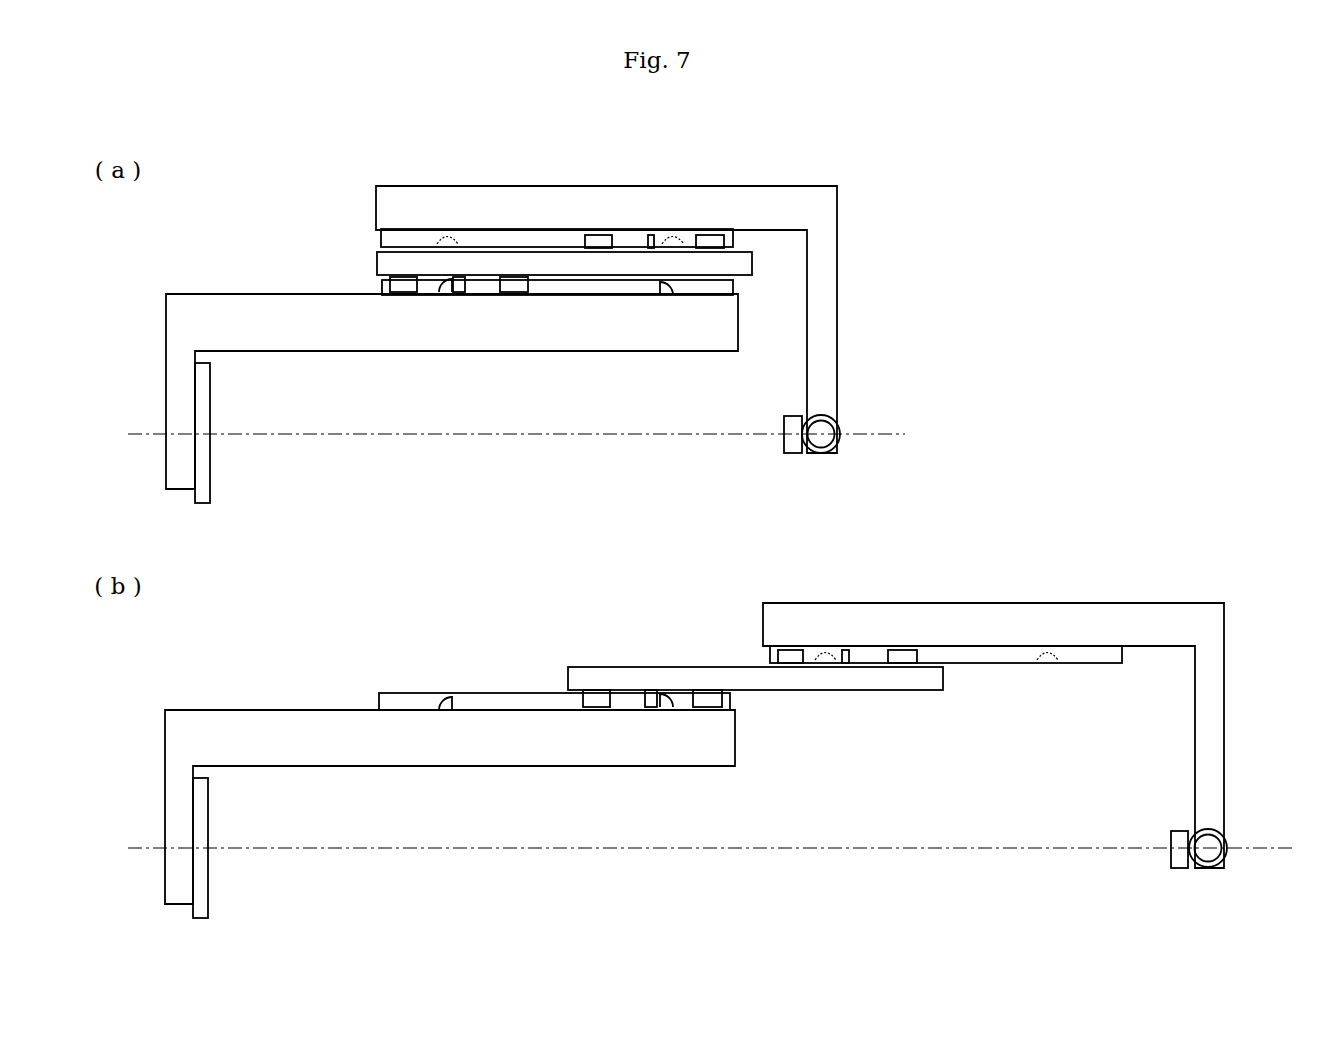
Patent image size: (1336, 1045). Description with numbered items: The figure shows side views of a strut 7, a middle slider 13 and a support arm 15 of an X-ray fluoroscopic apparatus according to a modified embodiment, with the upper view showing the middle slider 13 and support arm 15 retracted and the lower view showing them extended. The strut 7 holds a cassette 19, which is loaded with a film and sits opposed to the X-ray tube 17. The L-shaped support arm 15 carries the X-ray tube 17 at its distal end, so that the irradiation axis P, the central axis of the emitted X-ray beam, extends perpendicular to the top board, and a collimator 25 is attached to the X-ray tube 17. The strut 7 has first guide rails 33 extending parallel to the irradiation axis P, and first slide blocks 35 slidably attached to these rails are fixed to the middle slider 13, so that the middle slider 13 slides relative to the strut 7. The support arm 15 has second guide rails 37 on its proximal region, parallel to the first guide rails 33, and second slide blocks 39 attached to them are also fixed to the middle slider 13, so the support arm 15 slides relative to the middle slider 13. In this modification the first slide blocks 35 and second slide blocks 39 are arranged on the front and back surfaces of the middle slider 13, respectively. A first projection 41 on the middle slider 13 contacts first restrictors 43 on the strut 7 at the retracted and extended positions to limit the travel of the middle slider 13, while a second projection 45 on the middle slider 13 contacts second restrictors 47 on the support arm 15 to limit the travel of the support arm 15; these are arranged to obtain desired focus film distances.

The strut 7 is at (210, 294).
The middle slider 13 is at (753, 264).
The support arm 15 is at (838, 220).
The X-ray tube 17 is at (840, 426).
The cassette 19 is at (211, 416).
The collimator 25 is at (790, 416).
The first guide rails 33 is at (382, 290).
The first slide blocks 35 is at (400, 295).
The second guide rails 37 is at (380, 242).
The second slide blocks 39 is at (598, 235).
The first projection 41 is at (462, 293).
The first restrictors 43 is at (441, 293).
The second projection 45 is at (650, 235).
The second restrictors 47 is at (450, 236).
The irradiation axis P is at (893, 433).